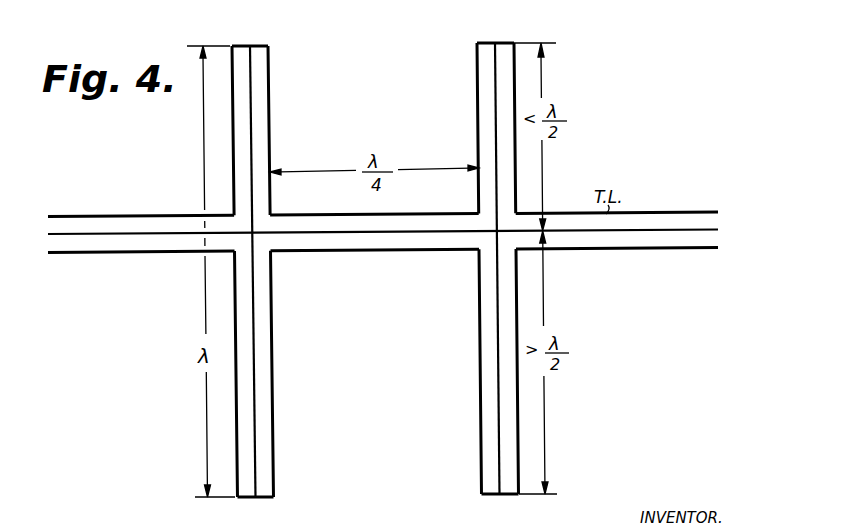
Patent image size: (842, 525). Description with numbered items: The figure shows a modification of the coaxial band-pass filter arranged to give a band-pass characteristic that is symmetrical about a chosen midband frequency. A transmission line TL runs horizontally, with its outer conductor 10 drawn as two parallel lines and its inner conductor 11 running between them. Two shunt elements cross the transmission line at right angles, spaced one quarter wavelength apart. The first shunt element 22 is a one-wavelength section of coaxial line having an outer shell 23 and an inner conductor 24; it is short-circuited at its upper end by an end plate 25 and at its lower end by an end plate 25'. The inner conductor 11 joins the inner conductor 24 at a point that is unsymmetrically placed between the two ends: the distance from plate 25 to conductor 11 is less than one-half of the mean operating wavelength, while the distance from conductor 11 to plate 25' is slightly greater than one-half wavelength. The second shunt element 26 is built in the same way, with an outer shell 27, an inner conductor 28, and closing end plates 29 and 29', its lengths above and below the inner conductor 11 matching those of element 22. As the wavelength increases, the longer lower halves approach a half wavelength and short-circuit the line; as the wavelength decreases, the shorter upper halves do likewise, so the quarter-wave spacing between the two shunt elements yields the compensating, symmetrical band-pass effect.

The transmission line outer conductor 10 is at (115, 216).
The inner conductor 11 is at (150, 232).
The first shunt element 22 is at (234, 171).
The outer shell 23 is at (236, 381).
The inner conductor 24 is at (252, 113).
The end plate 25 is at (250, 31).
The end plate 25' is at (256, 511).
The shunt element 26 is at (477, 111).
The outer shell 27 is at (480, 402).
The inner conductor 28 is at (497, 190).
The end plate 29 is at (495, 28).
The end plate 29' is at (500, 509).